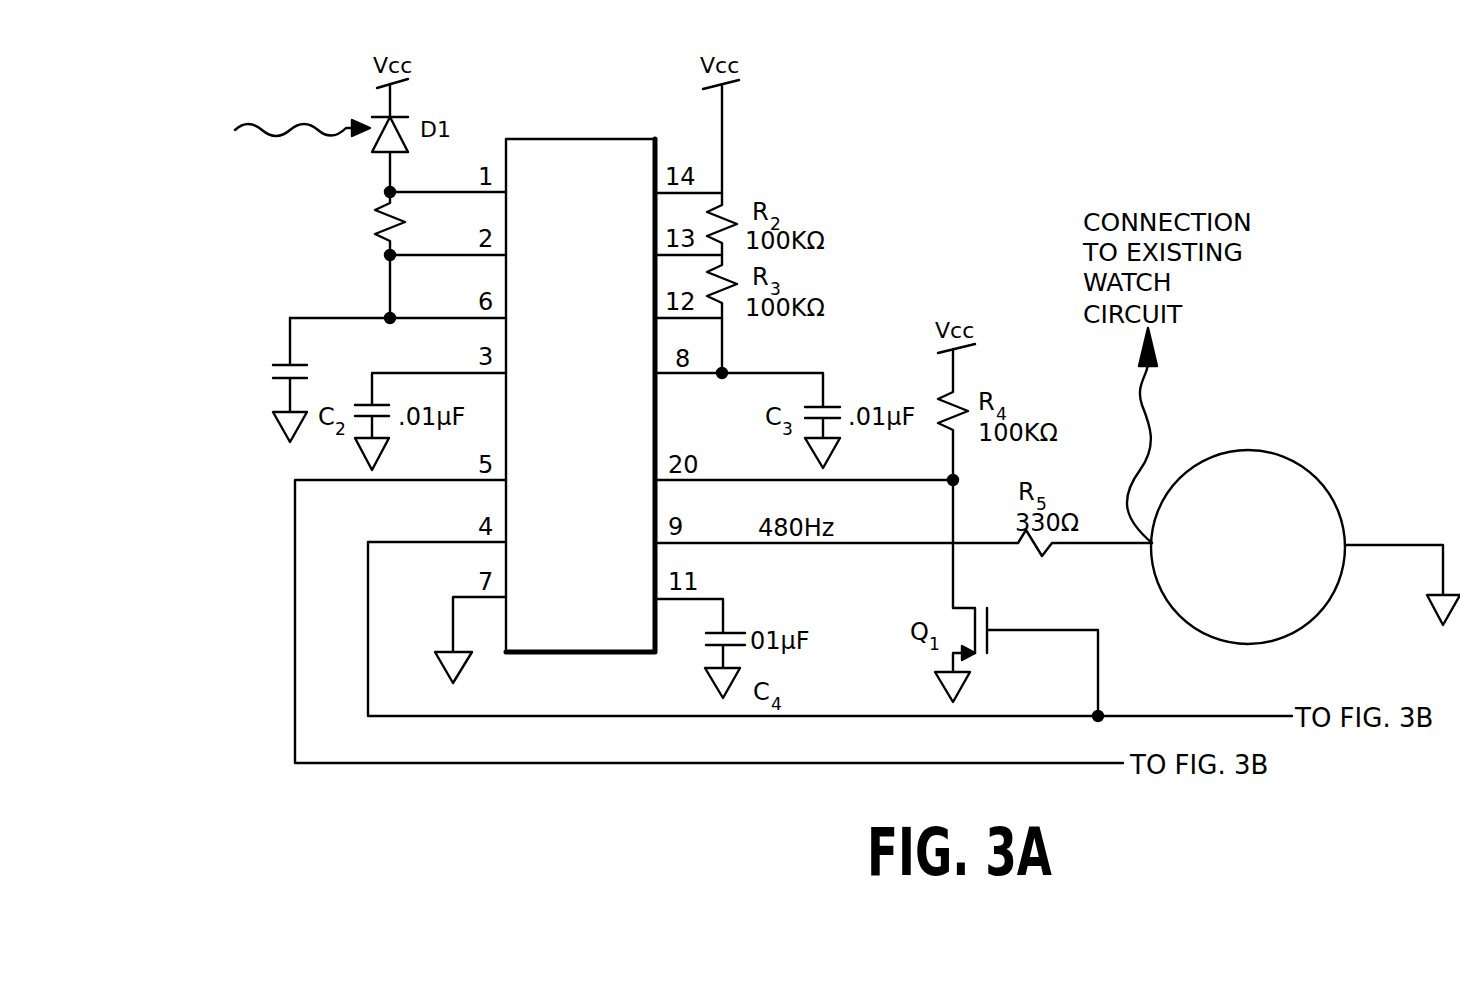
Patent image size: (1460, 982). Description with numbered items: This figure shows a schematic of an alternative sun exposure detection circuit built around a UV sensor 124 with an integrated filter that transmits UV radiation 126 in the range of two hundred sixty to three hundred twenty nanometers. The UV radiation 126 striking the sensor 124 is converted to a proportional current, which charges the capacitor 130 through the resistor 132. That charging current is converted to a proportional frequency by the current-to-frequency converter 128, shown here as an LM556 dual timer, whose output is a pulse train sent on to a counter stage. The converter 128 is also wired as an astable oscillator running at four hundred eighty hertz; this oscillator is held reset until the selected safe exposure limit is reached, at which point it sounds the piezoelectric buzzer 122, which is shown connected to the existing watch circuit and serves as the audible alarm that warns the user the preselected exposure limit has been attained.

The audible alarm 122 is at (1302, 462).
The UV sensor 124 is at (560, 346).
The UV radiation 126 is at (277, 116).
The current-to-frequency converter 128 is at (590, 508).
The capacitor 130 is at (237, 385).
The resistor 132 is at (285, 216).